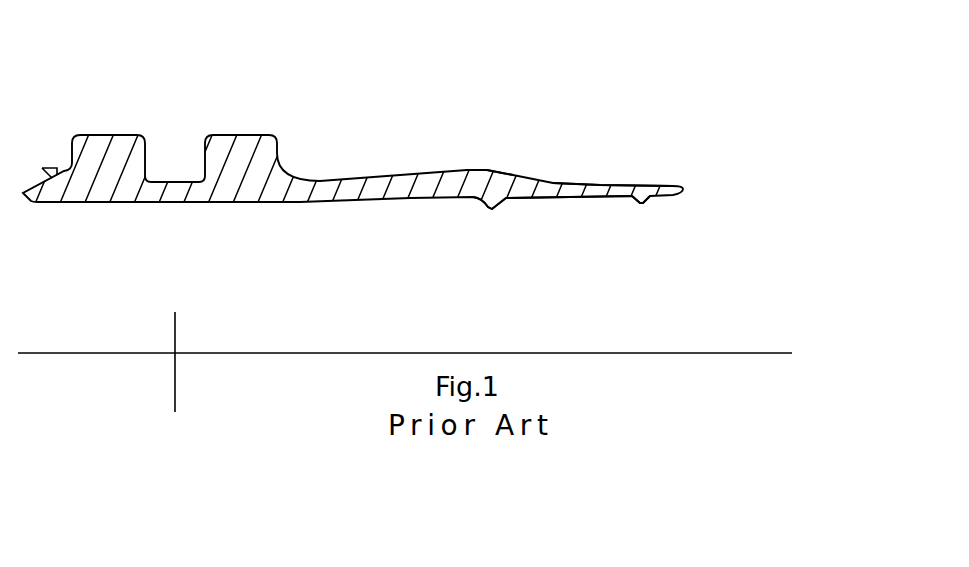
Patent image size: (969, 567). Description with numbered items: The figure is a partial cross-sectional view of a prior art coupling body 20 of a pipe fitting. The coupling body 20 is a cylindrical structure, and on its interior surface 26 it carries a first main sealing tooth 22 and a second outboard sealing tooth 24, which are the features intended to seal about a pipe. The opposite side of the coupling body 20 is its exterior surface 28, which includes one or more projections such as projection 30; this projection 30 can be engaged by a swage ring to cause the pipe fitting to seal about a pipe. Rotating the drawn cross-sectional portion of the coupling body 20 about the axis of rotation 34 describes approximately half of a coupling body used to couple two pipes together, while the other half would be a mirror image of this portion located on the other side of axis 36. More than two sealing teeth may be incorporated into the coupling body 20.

The coupling body 20 is at (442, 75).
The first main sealing tooth 22 is at (490, 208).
The second outboard sealing tooth 24 is at (642, 204).
The interior surface 26 is at (573, 197).
The exterior surface 28 is at (607, 184).
The projection 30 is at (490, 170).
The axis of rotation 34 is at (722, 352).
The axis 36 is at (175, 395).